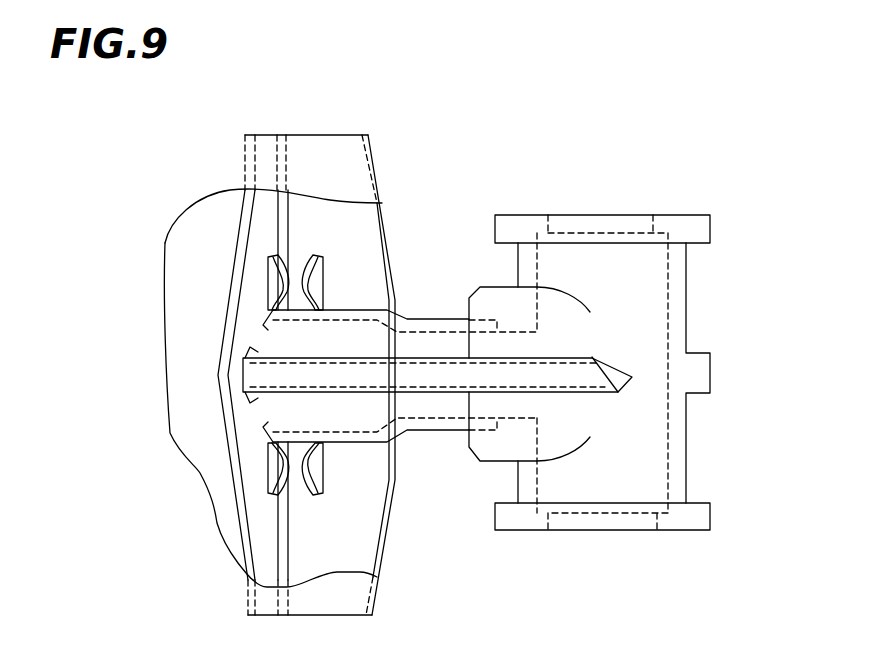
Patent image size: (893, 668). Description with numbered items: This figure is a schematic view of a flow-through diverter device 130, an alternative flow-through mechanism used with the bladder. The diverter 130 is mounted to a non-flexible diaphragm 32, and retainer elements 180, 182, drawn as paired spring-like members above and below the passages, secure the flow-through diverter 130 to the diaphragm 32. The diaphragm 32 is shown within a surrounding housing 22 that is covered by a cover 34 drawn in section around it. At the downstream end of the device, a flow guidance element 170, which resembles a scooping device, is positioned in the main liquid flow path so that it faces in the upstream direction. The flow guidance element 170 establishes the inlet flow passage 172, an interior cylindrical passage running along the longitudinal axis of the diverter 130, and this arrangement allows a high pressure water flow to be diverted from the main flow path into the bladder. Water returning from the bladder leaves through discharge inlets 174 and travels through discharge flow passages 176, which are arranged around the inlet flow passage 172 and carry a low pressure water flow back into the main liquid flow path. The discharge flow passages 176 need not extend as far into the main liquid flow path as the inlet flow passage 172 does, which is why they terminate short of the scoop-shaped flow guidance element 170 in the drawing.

The housing 22 is at (392, 160).
The non-flexible diaphragm 32 is at (278, 147).
The cover 34 is at (247, 135).
The flow-through diverter device 130 is at (647, 177).
The flow guidance element 170 is at (620, 385).
The inlet flow passage 172 is at (580, 368).
The discharge inlets 174 is at (258, 333).
The discharge flow passages 176 is at (437, 332).
The retainer element 180 is at (316, 497).
The retainer element 182 is at (275, 493).